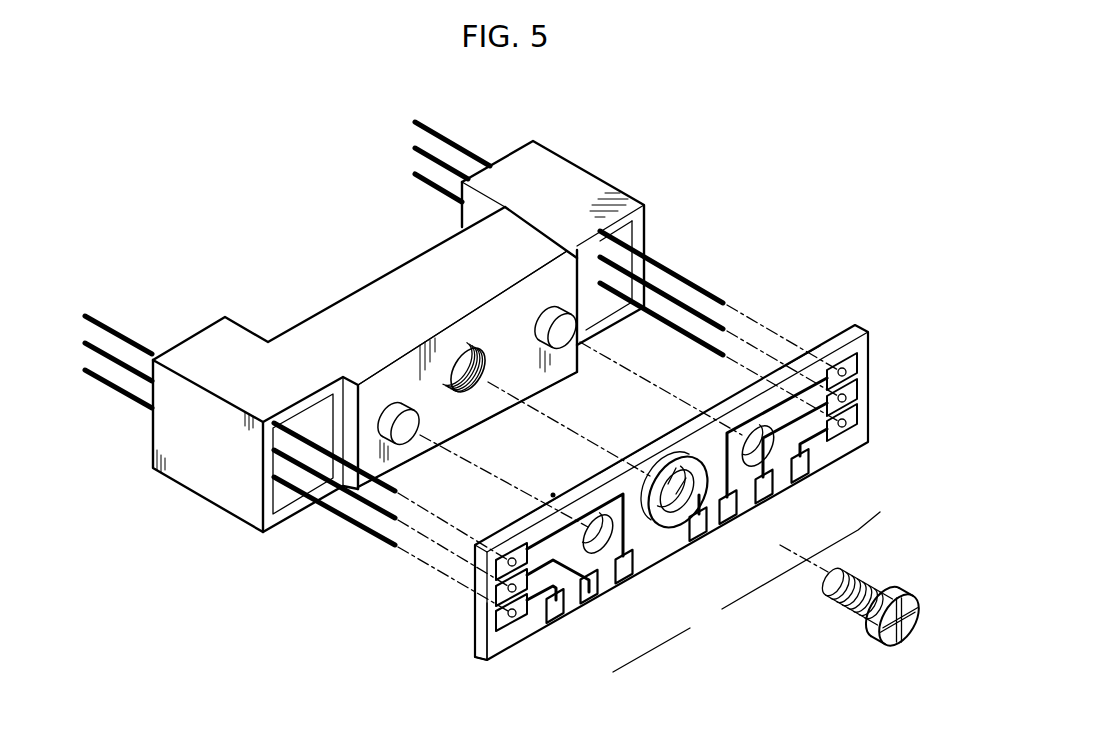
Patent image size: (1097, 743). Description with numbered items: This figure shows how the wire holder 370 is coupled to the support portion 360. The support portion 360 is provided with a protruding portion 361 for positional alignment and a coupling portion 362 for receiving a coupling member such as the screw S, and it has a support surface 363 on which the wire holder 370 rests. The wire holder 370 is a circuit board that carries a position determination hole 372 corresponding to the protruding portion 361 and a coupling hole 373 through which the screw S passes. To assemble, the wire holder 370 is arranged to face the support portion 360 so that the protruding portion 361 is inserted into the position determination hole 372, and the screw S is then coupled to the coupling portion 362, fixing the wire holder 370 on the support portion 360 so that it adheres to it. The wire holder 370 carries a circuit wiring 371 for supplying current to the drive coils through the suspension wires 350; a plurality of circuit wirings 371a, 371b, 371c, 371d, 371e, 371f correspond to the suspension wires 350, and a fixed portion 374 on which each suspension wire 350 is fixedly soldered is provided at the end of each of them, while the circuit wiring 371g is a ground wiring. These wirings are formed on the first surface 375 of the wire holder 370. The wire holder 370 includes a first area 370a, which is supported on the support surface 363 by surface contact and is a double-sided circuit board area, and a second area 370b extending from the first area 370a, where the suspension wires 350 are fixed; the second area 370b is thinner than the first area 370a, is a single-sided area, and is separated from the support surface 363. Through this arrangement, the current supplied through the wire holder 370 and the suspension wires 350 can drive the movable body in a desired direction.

The suspension wire 350 is at (692, 282).
The support portion 360 is at (571, 163).
The protruding portion 361 is at (553, 318).
The coupling portion 362 is at (490, 350).
The support surface 363 is at (432, 349).
The wire holder 370 is at (868, 341).
The first area 370a is at (655, 440).
The second area 370b is at (806, 348).
The circuit wiring 371 is at (746, 592).
The circuit wiring 371a is at (553, 624).
The circuit wiring 371b is at (589, 604).
The circuit wiring 371c is at (626, 584).
The circuit wiring 371d is at (733, 525).
The circuit wiring 371e is at (771, 504).
The circuit wiring 371f is at (807, 479).
The ground wiring 371g is at (699, 542).
The position determination hole 372 is at (553, 494).
The coupling hole 373 is at (655, 459).
The fixed portion 374 is at (506, 616).
The first surface 375 is at (497, 648).
The screw S is at (888, 650).